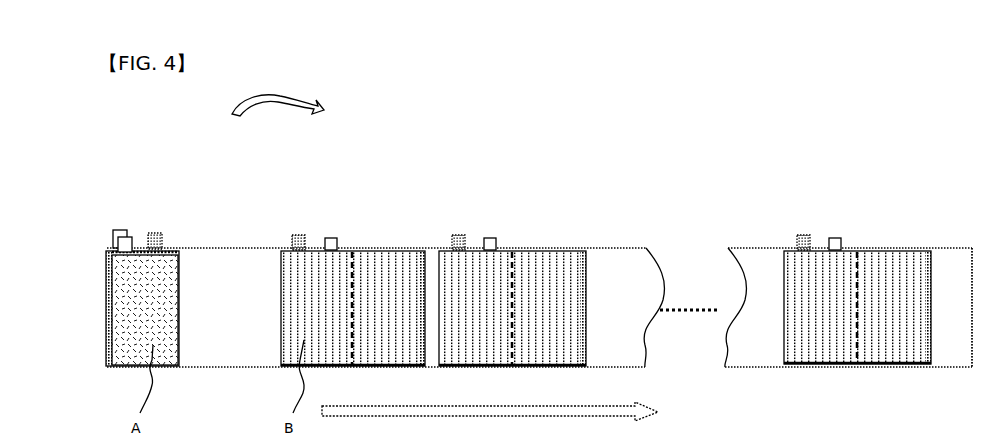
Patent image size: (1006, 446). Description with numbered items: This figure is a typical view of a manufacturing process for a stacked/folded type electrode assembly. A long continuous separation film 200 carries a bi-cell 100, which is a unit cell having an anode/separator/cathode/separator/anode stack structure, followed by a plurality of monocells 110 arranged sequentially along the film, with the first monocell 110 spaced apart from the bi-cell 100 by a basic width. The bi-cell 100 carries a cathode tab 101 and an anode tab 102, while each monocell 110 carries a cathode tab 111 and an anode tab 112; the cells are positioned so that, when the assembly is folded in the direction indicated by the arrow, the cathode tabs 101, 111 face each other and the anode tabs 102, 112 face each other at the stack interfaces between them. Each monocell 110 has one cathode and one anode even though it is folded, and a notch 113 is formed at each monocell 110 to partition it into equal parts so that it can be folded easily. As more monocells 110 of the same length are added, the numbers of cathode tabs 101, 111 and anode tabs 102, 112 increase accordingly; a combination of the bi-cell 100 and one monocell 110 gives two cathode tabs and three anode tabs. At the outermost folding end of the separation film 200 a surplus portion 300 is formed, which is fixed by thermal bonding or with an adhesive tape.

The bi-cell 100 is at (181, 243).
The cathode tab 101 is at (158, 233).
The anode tab 102 is at (122, 230).
The monocell 110 is at (409, 242).
The cathode tab 111 is at (298, 234).
The anode tab 112 is at (338, 238).
The notch 113 is at (353, 272).
The separation film 200 is at (625, 247).
The surplus portion 300 is at (958, 346).